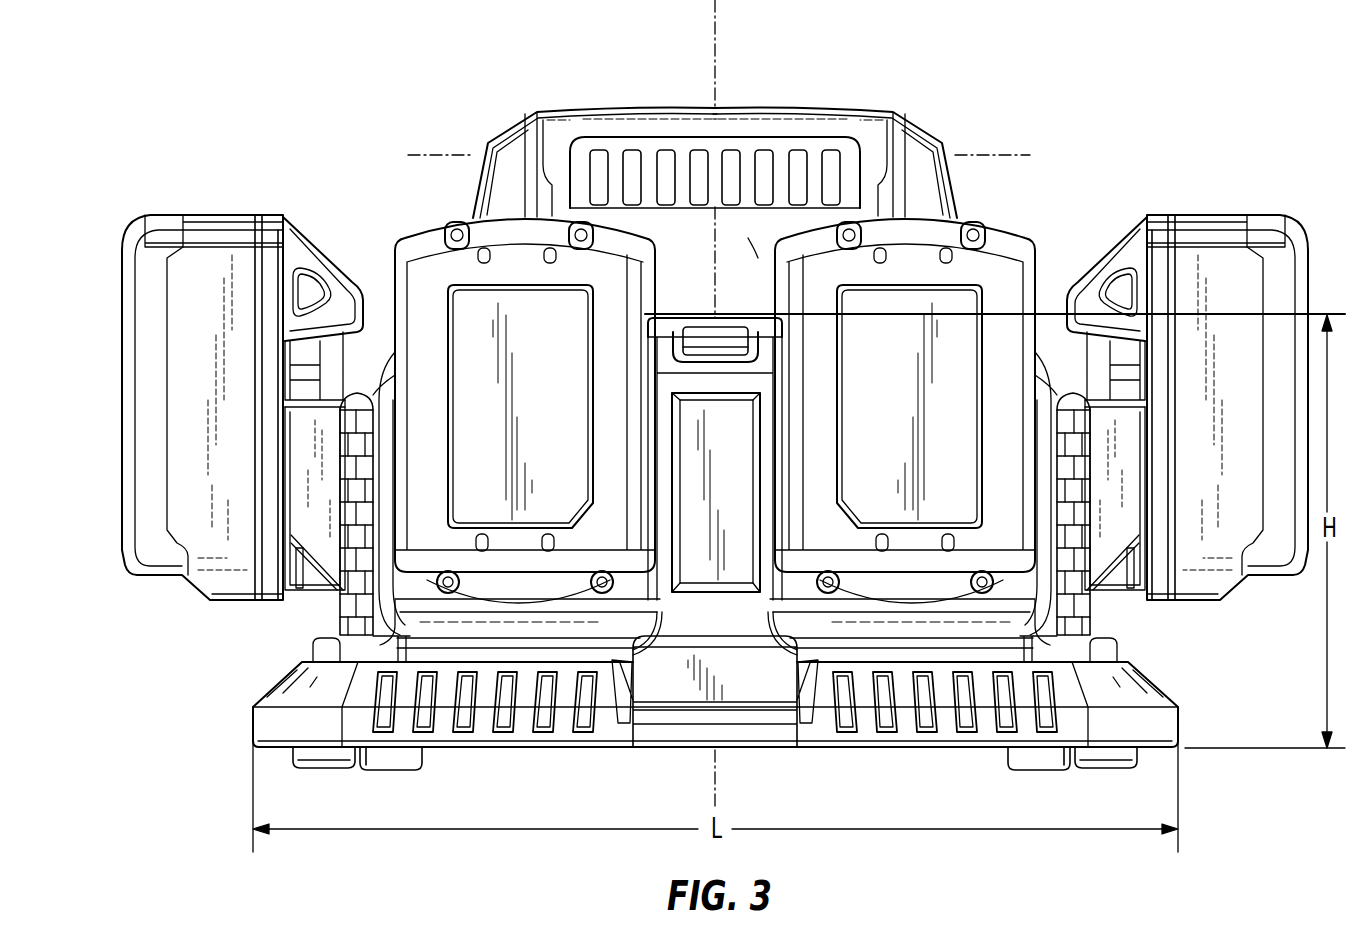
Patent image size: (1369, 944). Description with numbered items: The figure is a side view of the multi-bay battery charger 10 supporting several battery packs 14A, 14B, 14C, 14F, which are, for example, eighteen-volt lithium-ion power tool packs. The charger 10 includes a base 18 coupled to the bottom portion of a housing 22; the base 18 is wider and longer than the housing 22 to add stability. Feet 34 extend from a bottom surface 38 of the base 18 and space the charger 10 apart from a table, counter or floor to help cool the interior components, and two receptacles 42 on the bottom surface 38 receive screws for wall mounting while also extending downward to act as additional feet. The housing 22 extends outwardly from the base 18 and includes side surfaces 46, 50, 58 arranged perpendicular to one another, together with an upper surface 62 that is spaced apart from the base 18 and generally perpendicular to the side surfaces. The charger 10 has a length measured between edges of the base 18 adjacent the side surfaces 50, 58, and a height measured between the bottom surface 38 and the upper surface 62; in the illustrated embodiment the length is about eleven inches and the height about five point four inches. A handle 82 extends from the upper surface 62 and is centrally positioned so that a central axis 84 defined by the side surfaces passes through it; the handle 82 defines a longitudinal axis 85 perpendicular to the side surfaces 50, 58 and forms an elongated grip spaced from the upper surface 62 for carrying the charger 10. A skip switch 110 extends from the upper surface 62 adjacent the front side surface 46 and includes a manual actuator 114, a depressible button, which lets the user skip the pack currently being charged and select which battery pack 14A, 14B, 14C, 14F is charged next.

The multi-bay battery charger 10 is at (1066, 110).
The battery pack 14A is at (432, 220).
The battery pack 14B is at (998, 220).
The battery pack 14C is at (1207, 215).
The battery pack 14F is at (231, 215).
The base 18 is at (863, 752).
The housing 22 is at (312, 645).
The feet 34 is at (388, 765).
The bottom surface 38 is at (608, 752).
The receptacles 42 is at (317, 770).
The side surface 46 is at (618, 606).
The side surface 50 is at (1093, 615).
The side surface 58 is at (342, 616).
The upper surface 62 is at (718, 338).
The handle 82 is at (677, 125).
The central axis 84 is at (713, 45).
The longitudinal axis 85 is at (446, 155).
The skip switch 110 is at (693, 316).
The manual actuator 114 is at (755, 248).